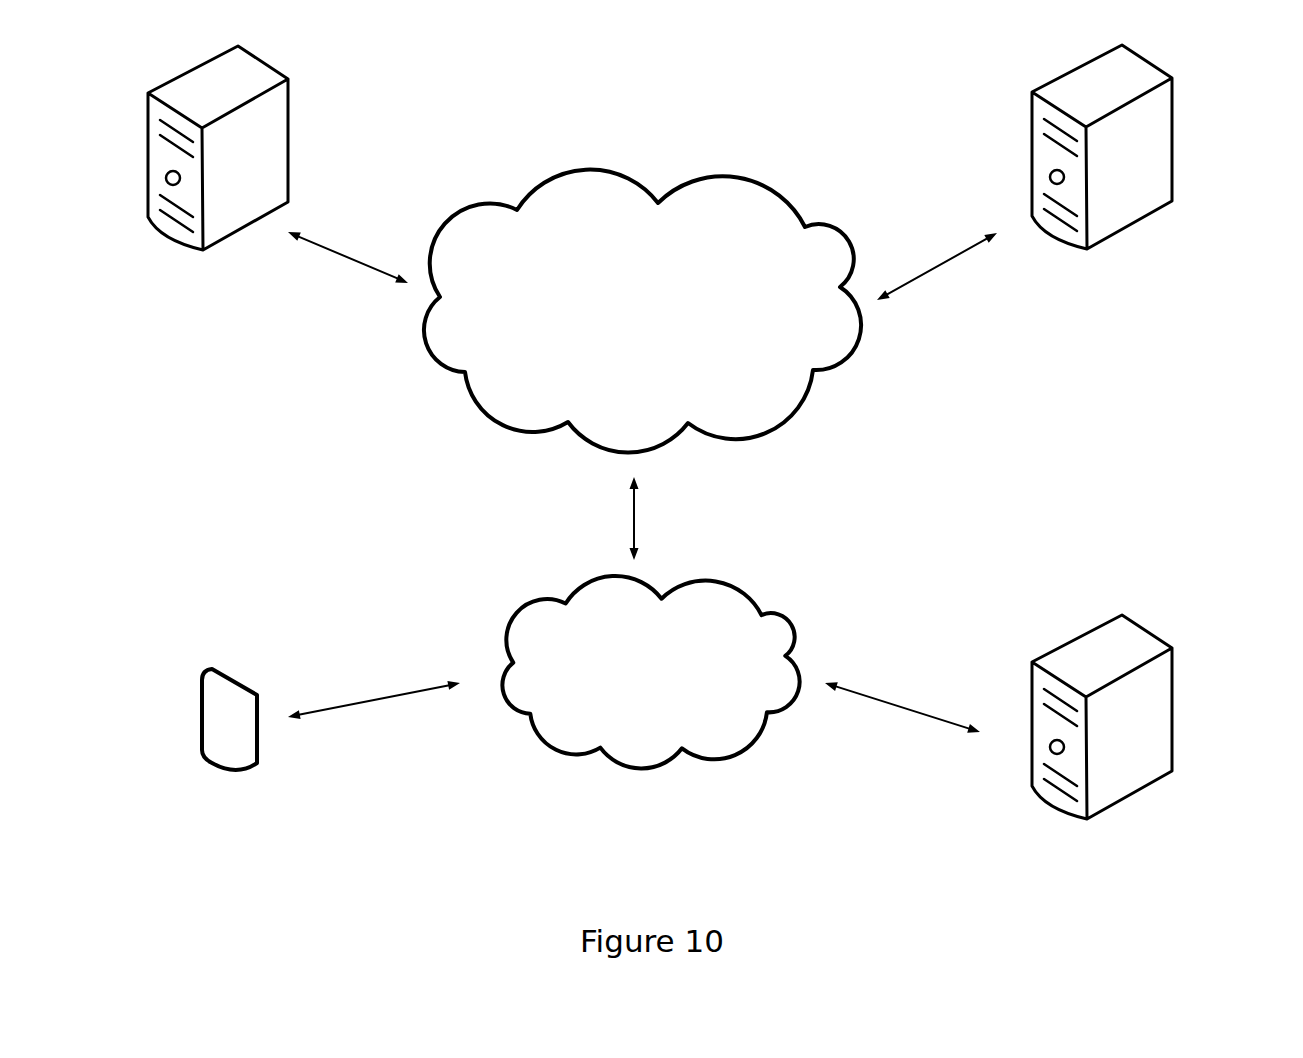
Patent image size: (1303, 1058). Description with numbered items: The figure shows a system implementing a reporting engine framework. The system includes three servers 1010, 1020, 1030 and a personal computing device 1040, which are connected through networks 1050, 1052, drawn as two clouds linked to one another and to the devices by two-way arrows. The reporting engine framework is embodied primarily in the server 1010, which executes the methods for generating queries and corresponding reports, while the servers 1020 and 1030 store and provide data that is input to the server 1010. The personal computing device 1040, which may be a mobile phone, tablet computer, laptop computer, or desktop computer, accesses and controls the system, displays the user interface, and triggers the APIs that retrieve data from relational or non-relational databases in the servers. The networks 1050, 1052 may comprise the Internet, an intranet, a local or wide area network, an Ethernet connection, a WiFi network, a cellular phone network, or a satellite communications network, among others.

The server 1010 is at (1135, 700).
The server 1020 is at (1117, 75).
The server 1030 is at (218, 77).
The personal computing device 1040 is at (200, 687).
The network 1050 is at (642, 311).
The network 1052 is at (650, 672).